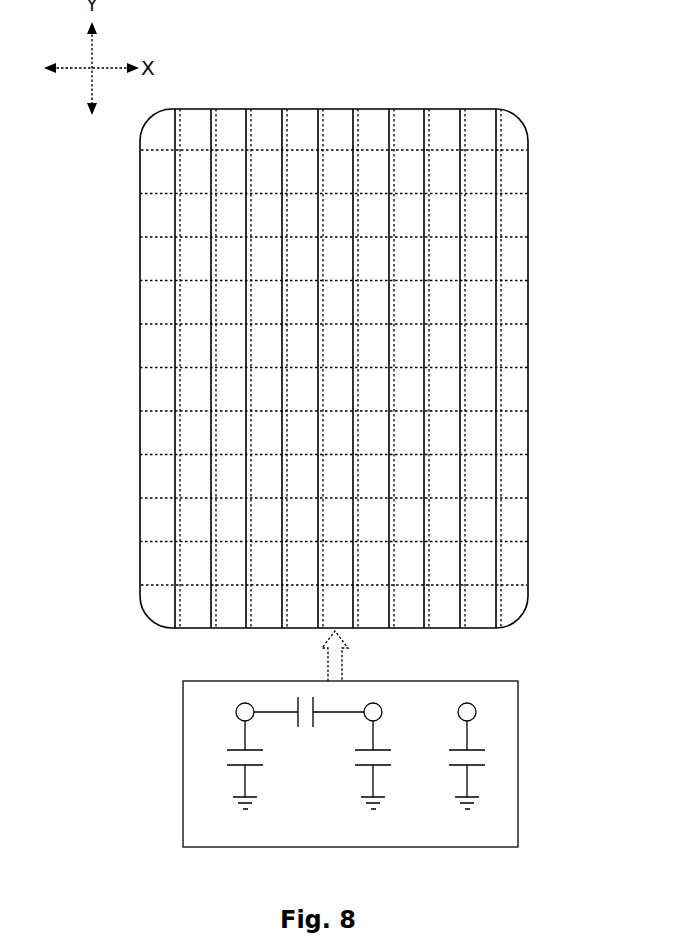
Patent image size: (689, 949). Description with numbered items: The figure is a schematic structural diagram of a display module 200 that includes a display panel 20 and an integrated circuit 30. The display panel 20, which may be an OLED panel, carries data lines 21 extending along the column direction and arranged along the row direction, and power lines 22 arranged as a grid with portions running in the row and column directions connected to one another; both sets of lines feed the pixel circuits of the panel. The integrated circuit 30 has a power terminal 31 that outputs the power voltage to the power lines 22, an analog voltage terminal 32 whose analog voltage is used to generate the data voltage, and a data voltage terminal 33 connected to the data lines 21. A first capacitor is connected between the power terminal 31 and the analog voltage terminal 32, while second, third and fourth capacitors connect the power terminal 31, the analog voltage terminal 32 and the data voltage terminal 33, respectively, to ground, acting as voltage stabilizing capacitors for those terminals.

The display panel 20 is at (357, 362).
The data lines 21 is at (318, 123).
The power lines 22 is at (375, 150).
The integrated circuit 30 is at (369, 753).
The power terminal 31 is at (245, 703).
The analog voltage terminal 32 is at (373, 703).
The data voltage terminal 33 is at (467, 703).
The display module 200 is at (570, 888).